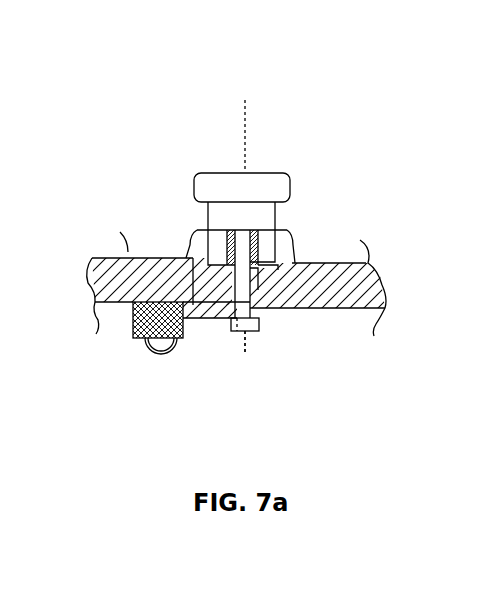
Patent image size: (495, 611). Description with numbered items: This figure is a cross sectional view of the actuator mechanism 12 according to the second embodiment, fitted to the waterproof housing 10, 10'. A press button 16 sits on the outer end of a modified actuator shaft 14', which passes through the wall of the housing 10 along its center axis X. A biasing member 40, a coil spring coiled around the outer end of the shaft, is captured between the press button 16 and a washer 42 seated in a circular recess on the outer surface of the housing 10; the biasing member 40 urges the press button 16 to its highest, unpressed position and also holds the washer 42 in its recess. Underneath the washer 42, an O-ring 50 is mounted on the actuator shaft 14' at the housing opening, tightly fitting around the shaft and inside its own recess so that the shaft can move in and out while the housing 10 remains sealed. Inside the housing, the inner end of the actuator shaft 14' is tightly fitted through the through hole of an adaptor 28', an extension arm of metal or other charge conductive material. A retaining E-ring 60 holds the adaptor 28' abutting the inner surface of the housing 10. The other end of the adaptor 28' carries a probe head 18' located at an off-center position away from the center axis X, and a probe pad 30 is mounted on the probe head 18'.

The center axis X is at (247, 125).
The waterproof housing 10 is at (279, 253).
The panel / body 10' is at (318, 288).
The actuator mechanism 12 is at (172, 227).
The modified actuator shaft 14' is at (307, 371).
The press button 16 is at (281, 176).
The probe head 18' is at (103, 347).
The adaptor 28' is at (227, 369).
The probe pad 30 is at (160, 358).
The biasing member 40 is at (250, 247).
The washer 42 is at (271, 277).
The O-ring 50 is at (261, 289).
The E-ring 60 is at (256, 321).